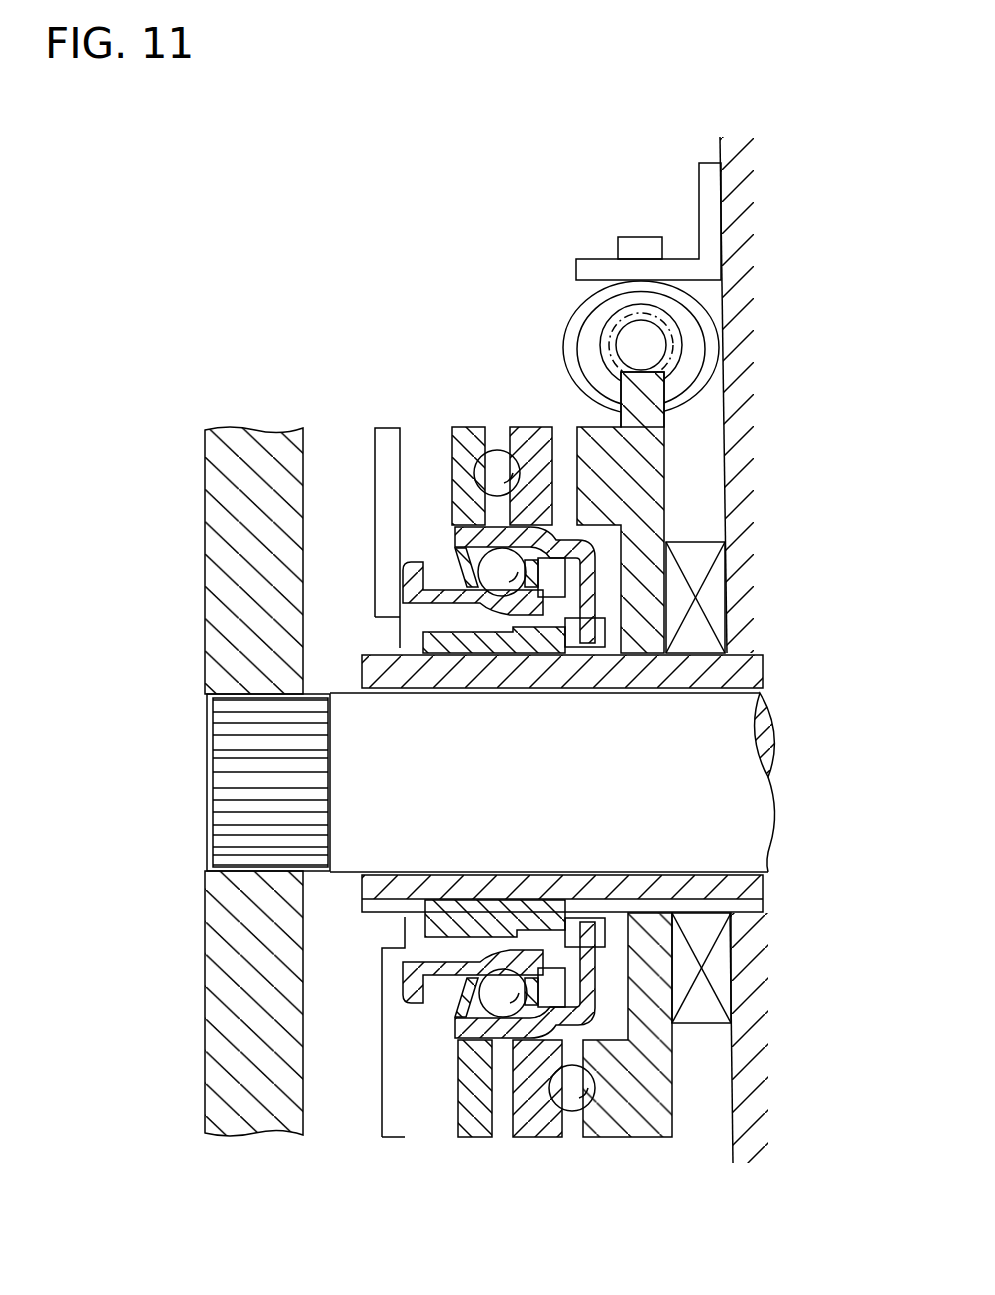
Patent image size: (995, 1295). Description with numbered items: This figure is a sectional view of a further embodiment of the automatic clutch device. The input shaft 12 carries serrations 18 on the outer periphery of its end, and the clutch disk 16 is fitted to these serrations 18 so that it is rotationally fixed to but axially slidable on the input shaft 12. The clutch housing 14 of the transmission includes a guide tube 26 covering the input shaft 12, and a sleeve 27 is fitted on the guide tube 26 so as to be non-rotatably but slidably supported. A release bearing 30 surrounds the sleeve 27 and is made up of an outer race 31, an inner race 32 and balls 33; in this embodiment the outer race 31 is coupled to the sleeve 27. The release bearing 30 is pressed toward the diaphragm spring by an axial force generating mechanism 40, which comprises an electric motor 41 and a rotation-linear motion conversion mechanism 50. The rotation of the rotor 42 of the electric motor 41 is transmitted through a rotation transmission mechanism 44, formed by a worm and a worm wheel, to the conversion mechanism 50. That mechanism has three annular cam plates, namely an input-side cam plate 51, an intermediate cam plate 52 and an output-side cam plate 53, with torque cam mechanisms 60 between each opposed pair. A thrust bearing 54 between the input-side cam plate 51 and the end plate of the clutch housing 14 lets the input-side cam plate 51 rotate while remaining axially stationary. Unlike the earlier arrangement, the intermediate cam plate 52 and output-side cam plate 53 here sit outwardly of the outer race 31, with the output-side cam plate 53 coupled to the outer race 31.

The input shaft 12 is at (760, 812).
The clutch housing 14 is at (748, 147).
The clutch disk 16 is at (215, 475).
The serrations 18 is at (227, 752).
The guide tube 26 is at (458, 670).
The sleeve 27 is at (567, 653).
The release bearing 30 is at (579, 749).
The outer race 31 is at (470, 528).
The inner race 32 is at (425, 605).
The balls 33 is at (490, 570).
The axial force generating mechanism 40 is at (664, 339).
The electric motor 41 is at (700, 340).
The rotor 42 is at (618, 333).
The rotation transmission mechanism 44 is at (668, 384).
The rotation-linear motion conversion mechanism 50 is at (708, 753).
The input-side cam plate 51 is at (652, 487).
The intermediate cam plate 52 is at (530, 435).
The output-side cam plate 53 is at (468, 437).
The thrust bearing 54 is at (718, 596).
The torque cam mechanisms 60 is at (497, 440).